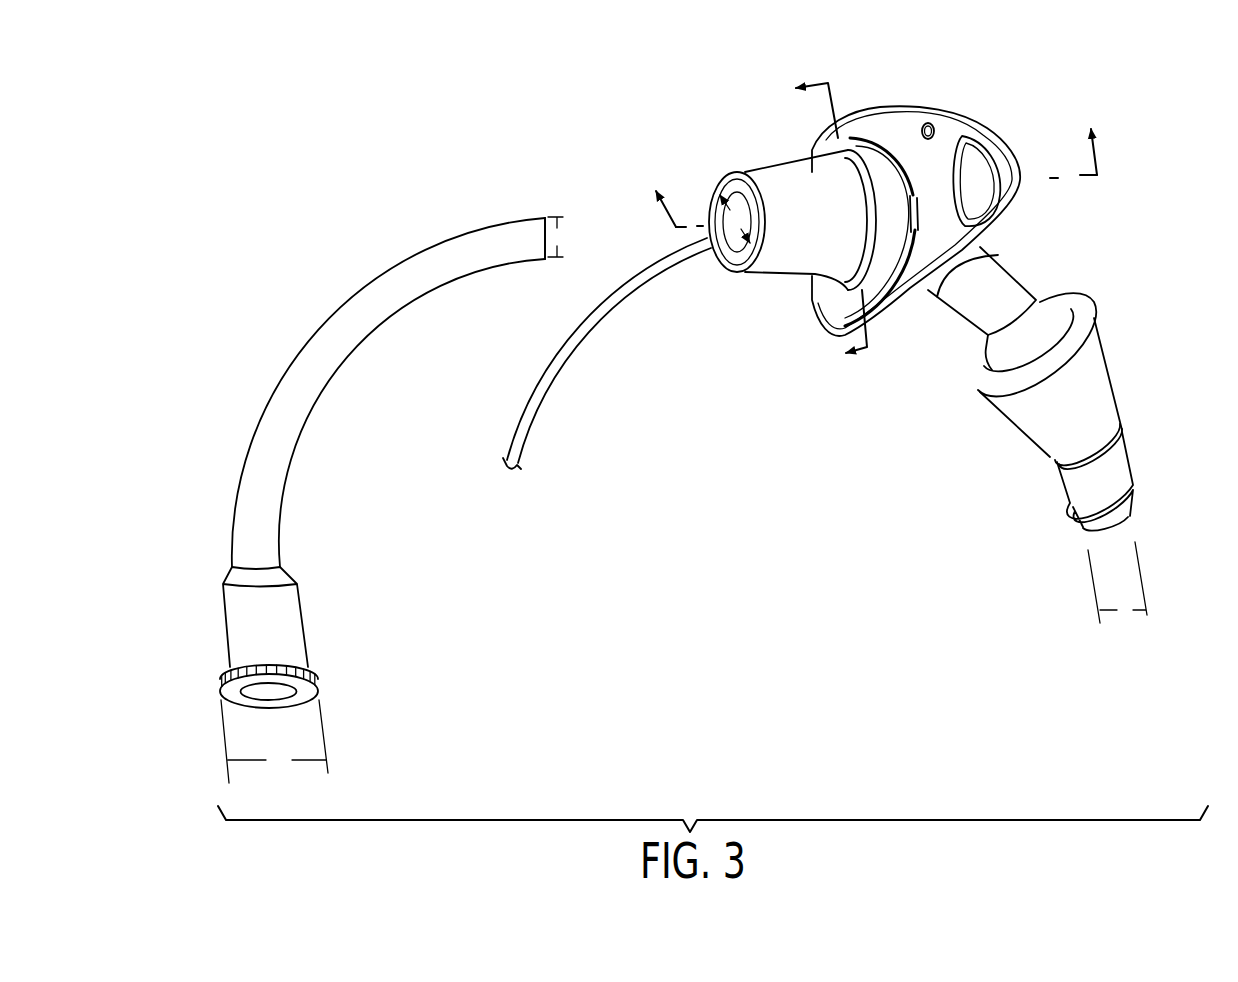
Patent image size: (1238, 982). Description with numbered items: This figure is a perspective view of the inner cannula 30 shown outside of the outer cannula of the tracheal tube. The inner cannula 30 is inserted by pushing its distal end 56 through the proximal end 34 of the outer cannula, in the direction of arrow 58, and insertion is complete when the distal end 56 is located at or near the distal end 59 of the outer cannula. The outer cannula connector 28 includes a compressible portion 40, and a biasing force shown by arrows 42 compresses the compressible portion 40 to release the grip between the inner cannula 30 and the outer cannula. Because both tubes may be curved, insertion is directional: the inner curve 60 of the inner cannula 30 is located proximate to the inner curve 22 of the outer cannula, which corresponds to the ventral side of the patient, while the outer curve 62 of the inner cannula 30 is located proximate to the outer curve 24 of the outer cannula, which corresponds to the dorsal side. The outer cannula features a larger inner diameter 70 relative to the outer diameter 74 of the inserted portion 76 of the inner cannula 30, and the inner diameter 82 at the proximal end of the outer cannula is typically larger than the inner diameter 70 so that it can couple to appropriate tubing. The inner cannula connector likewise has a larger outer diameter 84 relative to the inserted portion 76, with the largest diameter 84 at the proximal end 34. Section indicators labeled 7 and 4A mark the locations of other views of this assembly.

The inner cannula 30 is at (188, 458).
The inserted portion 76 is at (310, 264).
The outer curve 62 is at (283, 377).
The inner curve 60 is at (322, 393).
The distal end 56 is at (547, 209).
The outer diameter 74 is at (568, 235).
The proximal end 34 is at (252, 708).
The outer diameter 84 is at (286, 777).
The arrow 58 is at (614, 232).
The section line 7 is at (877, 172).
The outer cannula connector 28 is at (762, 155).
The inner diameter 82 is at (748, 219).
The inner curve 22 is at (930, 292).
The outer curve 24 is at (993, 240).
The distal end 59 is at (1112, 522).
The inner diameter 70 is at (1126, 615).
The compressible portion 40 is at (840, 316).
The arrows 42 is at (890, 204).
The section line 4A is at (815, 225).